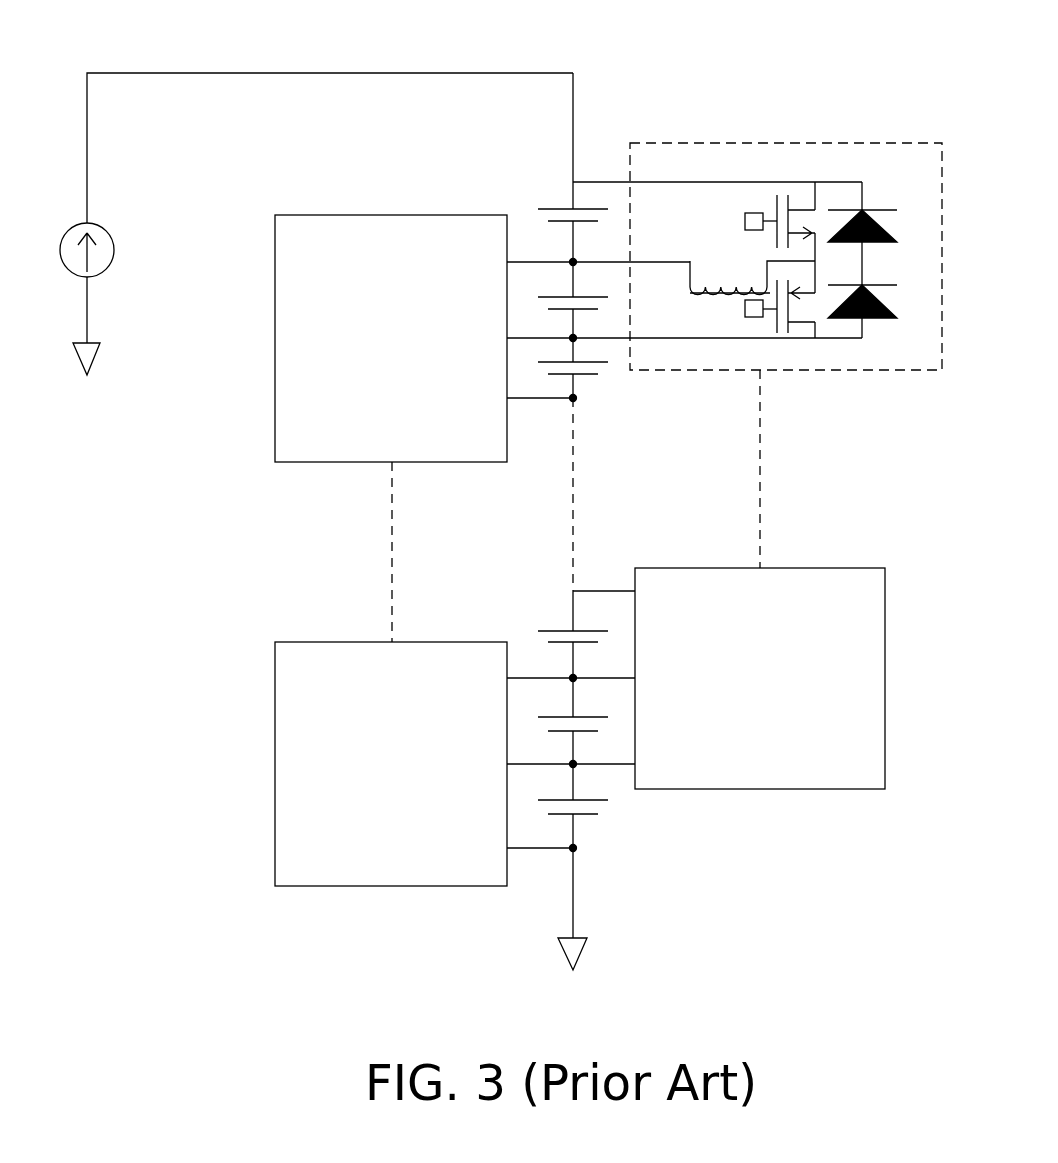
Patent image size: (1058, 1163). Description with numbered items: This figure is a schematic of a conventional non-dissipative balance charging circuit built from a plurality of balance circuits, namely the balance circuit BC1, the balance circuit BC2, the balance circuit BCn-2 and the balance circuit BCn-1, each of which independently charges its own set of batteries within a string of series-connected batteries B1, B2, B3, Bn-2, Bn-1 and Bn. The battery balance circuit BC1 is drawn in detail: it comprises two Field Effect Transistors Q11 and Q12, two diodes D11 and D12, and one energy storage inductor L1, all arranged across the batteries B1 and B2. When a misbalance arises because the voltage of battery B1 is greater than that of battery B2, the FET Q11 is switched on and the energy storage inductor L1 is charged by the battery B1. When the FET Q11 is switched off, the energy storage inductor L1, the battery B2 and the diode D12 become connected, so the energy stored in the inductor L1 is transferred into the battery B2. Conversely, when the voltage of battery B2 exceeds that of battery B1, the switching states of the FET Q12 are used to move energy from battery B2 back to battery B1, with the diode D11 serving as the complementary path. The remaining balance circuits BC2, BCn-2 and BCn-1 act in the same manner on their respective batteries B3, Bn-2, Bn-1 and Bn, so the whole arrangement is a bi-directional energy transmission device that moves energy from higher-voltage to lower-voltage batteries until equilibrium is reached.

The battery balance circuit BC1 is at (757, 190).
The balance circuit BC2 is at (391, 338).
The balance circuit BCn-1 is at (391, 764).
The balance circuit BCn-2 is at (760, 678).
The battery B1 is at (598, 237).
The battery B2 is at (684, 319).
The battery B3 is at (557, 382).
The battery Bn-2 is at (571, 656).
The battery Bn-1 is at (571, 742).
The battery Bn is at (557, 826).
The Field Effect Transistor Q11 is at (773, 214).
The Field Effect Transistor Q12 is at (760, 310).
The diode D11 is at (881, 232).
The diode D12 is at (881, 309).
The energy storage inductor L1 is at (752, 265).